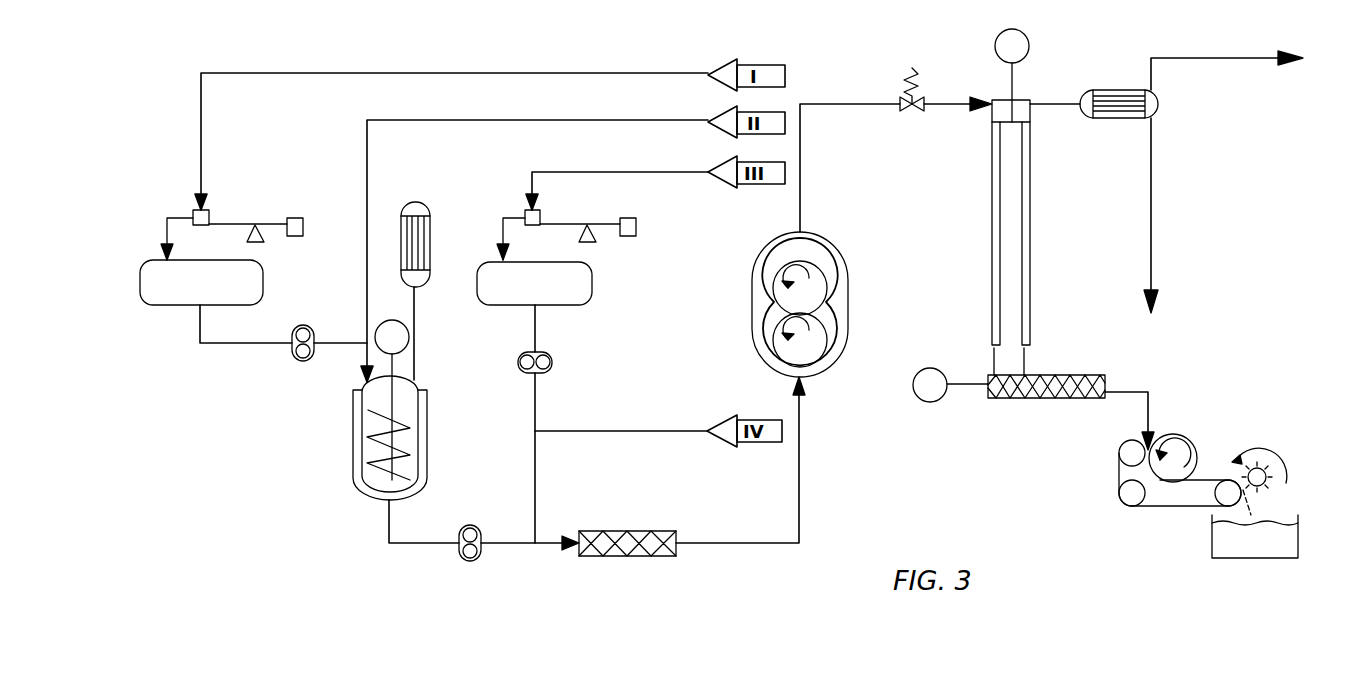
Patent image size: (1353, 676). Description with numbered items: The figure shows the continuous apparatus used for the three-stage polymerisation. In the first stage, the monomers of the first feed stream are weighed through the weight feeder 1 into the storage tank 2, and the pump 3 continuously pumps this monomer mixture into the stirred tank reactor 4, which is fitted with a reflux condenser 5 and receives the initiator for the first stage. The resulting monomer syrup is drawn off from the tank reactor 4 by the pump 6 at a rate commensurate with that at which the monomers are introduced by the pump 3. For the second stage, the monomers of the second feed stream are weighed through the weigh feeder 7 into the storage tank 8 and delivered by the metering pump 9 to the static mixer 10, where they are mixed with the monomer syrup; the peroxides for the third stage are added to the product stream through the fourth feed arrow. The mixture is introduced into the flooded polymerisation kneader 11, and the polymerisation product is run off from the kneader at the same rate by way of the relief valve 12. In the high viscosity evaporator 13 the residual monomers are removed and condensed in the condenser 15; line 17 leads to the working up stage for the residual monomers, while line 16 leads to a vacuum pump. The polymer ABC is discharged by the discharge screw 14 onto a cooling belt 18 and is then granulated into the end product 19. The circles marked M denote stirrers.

The weight feeder 1 is at (236, 224).
The storage tank 2 is at (216, 301).
The pump 3 is at (300, 327).
The tank reactor 4 is at (370, 431).
The reflux condenser 5 is at (420, 238).
The pump 6 is at (465, 527).
The weigh feeder 7 is at (566, 226).
The storage tank 8 is at (534, 307).
The metering pump 9 is at (552, 362).
The static mixer 10 is at (640, 531).
The flooded polymerisation kneader 11 is at (848, 311).
The relief valve 12 is at (928, 57).
The high viscosity evaporator 13 is at (1030, 237).
The discharge screw 14 is at (1060, 397).
The condenser 15 is at (1130, 92).
The vacuum pump line 16 is at (1222, 58).
The residual monomer working-up line 17 is at (1151, 272).
The cooling belt 18 is at (1212, 480).
The end product 19 is at (1272, 555).